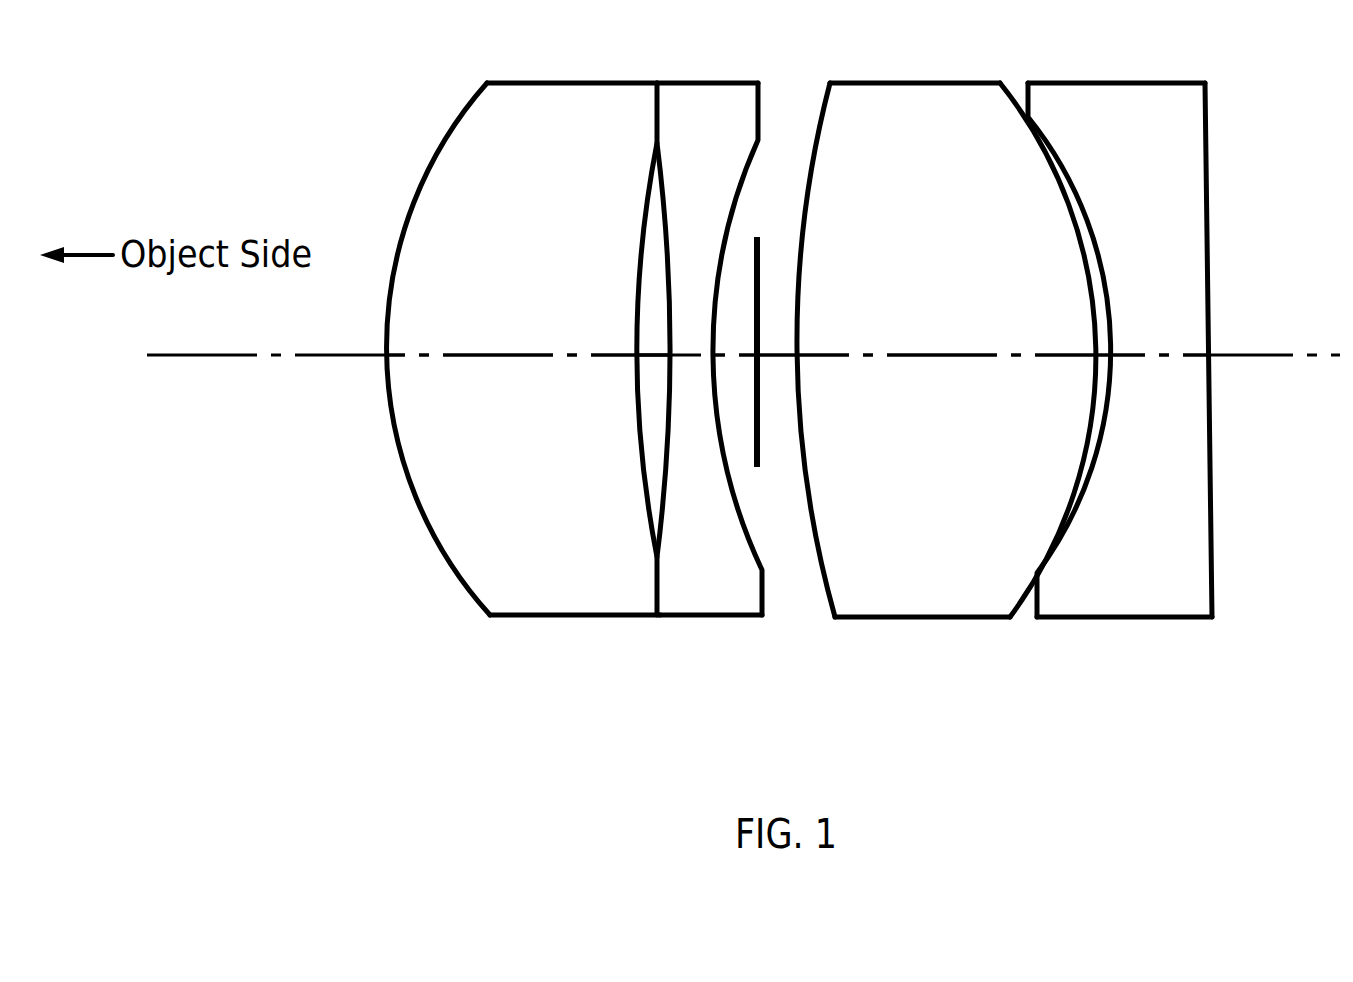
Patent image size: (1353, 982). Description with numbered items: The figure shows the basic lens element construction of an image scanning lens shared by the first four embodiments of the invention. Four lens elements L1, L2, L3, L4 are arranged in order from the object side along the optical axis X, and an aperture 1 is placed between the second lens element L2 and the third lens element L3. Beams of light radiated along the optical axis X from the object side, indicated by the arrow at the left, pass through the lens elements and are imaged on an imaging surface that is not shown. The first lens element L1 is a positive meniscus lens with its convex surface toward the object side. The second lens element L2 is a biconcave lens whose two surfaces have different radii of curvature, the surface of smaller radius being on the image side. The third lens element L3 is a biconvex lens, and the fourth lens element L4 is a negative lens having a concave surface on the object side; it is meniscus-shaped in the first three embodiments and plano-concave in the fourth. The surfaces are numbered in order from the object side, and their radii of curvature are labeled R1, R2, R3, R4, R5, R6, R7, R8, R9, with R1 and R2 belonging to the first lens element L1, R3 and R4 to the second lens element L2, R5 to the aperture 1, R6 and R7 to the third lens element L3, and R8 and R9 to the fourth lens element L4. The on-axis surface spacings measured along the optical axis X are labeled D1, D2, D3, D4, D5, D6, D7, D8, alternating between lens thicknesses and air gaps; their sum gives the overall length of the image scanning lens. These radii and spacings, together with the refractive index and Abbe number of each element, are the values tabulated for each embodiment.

The aperture 1 is at (763, 245).
The optical axis X is at (204, 360).
The first lens element L1 is at (541, 327).
The second lens element L2 is at (688, 363).
The third lens element L3 is at (946, 367).
The fourth lens element L4 is at (1135, 327).
The radius of curvature of the first surface R1 is at (415, 196).
The radius of curvature of the second surface R2 is at (666, 208).
The radius of curvature of the third surface R3 is at (640, 477).
The radius of curvature of the fourth surface R4 is at (762, 541).
The radius of curvature of the fifth surface R5 is at (752, 440).
The radius of curvature of the sixth surface R6 is at (828, 617).
The radius of curvature of the seventh surface R7 is at (1020, 605).
The radius of curvature of the eighth surface R8 is at (1088, 440).
The radius of curvature of the ninth surface R9 is at (1213, 522).
The on-axis surface spacing D1 is at (510, 352).
The on-axis surface spacing D2 is at (632, 322).
The on-axis surface spacing D3 is at (690, 362).
The on-axis surface spacing D4 is at (728, 352).
The on-axis surface spacing D5 is at (773, 352).
The on-axis surface spacing D6 is at (935, 352).
The on-axis surface spacing D7 is at (1092, 370).
The on-axis surface spacing D8 is at (1141, 352).